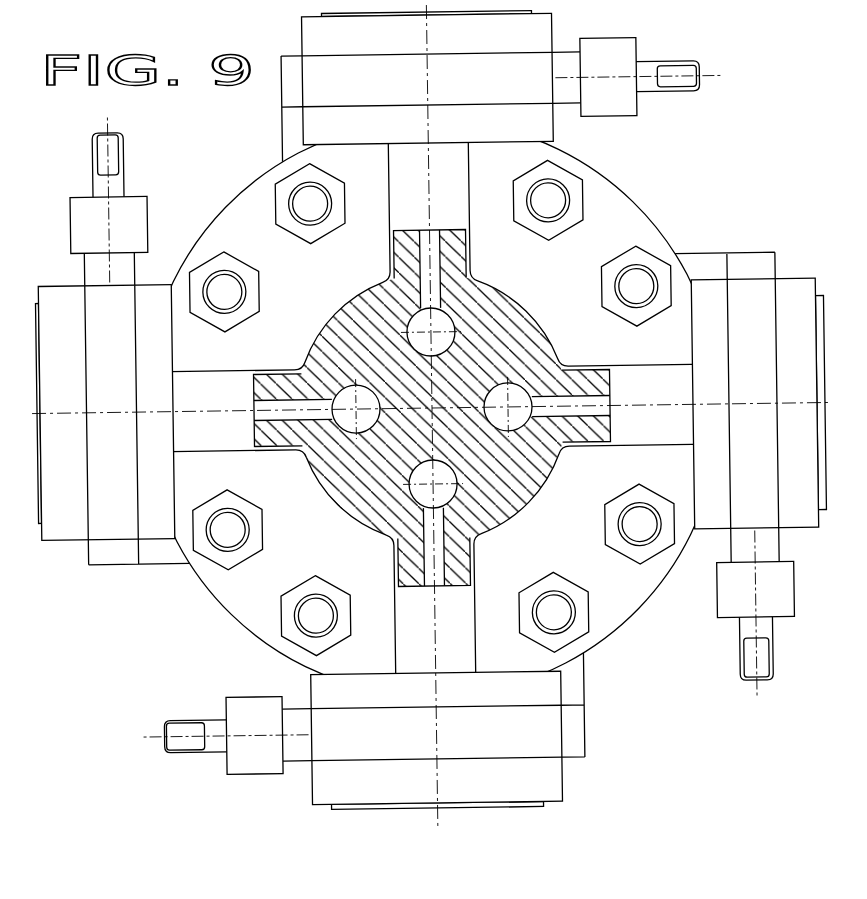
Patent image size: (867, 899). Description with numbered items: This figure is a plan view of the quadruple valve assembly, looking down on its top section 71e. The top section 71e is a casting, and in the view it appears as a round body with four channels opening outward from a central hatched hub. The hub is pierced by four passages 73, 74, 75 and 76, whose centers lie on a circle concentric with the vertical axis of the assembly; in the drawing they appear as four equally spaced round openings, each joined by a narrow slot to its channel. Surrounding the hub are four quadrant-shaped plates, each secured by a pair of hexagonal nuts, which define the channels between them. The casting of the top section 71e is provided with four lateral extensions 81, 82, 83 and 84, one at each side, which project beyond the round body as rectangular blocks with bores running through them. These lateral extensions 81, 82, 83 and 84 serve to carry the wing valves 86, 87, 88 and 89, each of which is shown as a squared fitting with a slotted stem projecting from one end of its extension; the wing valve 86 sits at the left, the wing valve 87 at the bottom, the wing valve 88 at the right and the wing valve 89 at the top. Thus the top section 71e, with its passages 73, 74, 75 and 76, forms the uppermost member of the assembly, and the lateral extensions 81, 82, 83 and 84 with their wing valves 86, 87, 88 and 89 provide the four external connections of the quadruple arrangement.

The top section 71e is at (432, 408).
The passage 73 is at (330, 432).
The passage 74 is at (413, 519).
The passage 75 is at (538, 386).
The passage 76 is at (469, 317).
The lateral extension 81 is at (257, 395).
The lateral extension 82 is at (456, 571).
The lateral extension 83 is at (611, 393).
The lateral extension 84 is at (454, 254).
The wing valve 86 is at (117, 369).
The wing valve 87 is at (227, 765).
The wing valve 88 is at (736, 613).
The wing valve 89 is at (636, 62).